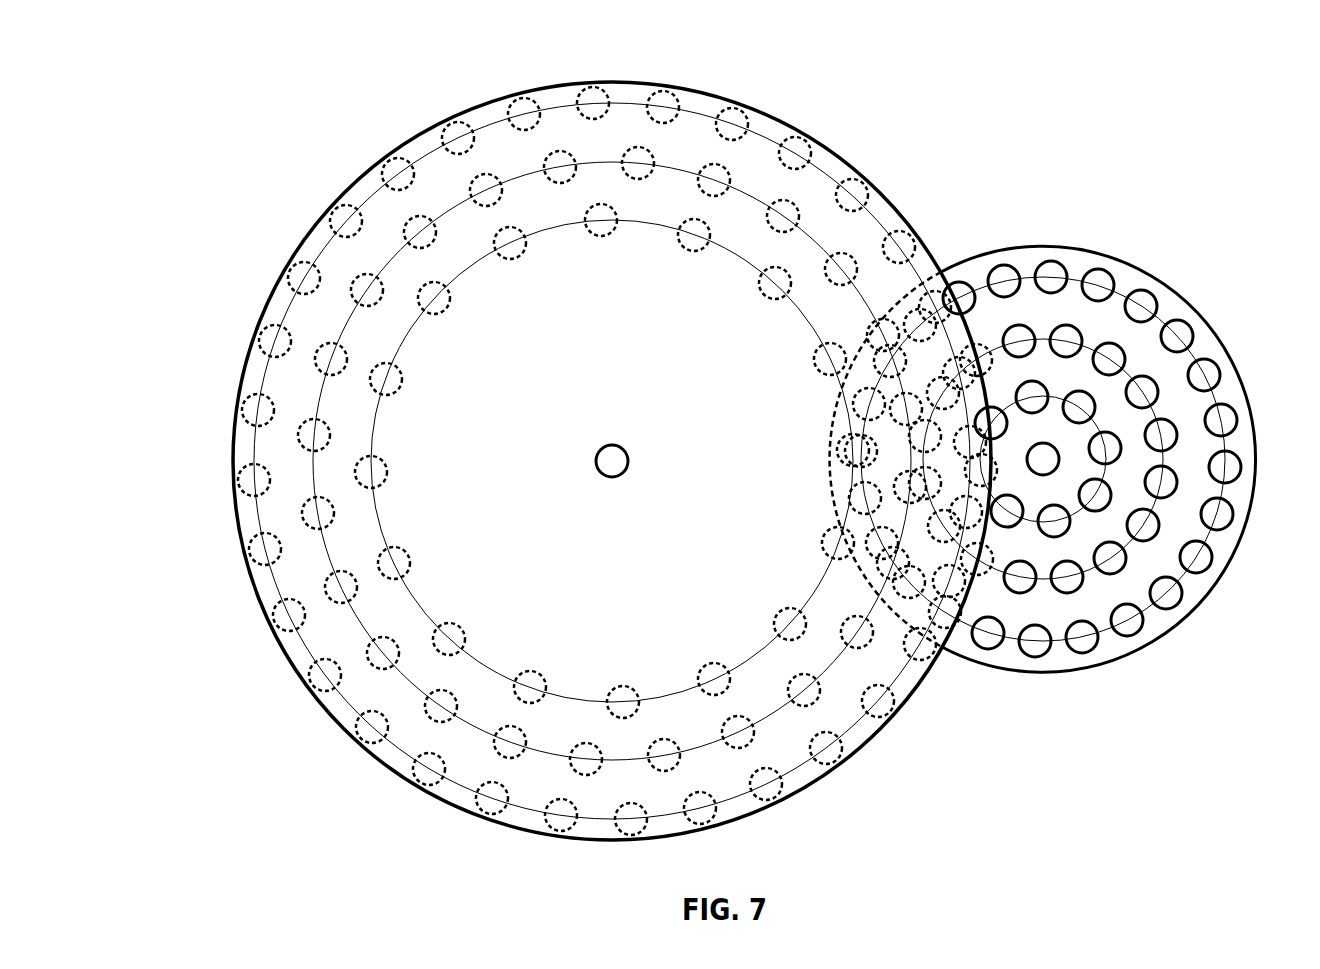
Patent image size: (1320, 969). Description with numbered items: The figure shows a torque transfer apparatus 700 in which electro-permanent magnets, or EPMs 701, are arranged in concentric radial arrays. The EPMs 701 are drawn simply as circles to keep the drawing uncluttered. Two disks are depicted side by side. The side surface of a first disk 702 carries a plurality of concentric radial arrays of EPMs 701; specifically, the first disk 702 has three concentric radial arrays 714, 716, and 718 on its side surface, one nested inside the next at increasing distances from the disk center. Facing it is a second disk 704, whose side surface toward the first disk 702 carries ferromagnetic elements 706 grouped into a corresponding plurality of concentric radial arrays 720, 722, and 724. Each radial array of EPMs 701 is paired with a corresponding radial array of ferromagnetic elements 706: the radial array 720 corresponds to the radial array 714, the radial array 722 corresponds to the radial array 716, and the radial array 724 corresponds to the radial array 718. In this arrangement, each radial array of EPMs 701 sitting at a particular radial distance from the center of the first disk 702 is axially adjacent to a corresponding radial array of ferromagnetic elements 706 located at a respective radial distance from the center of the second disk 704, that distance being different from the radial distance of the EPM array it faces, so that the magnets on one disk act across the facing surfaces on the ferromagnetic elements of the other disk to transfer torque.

The torque transfer apparatus 700 is at (230, 120).
The EPMs 701 is at (1198, 573).
The first disk 702 is at (1002, 247).
The second disk 704 is at (522, 93).
The ferromagnetic elements 706 is at (594, 88).
The radial array 714 is at (1223, 447).
The radial array 716 is at (1127, 368).
The radial array 718 is at (1043, 387).
The radial array 720 is at (525, 228).
The radial array 722 is at (748, 193).
The radial array 724 is at (700, 103).